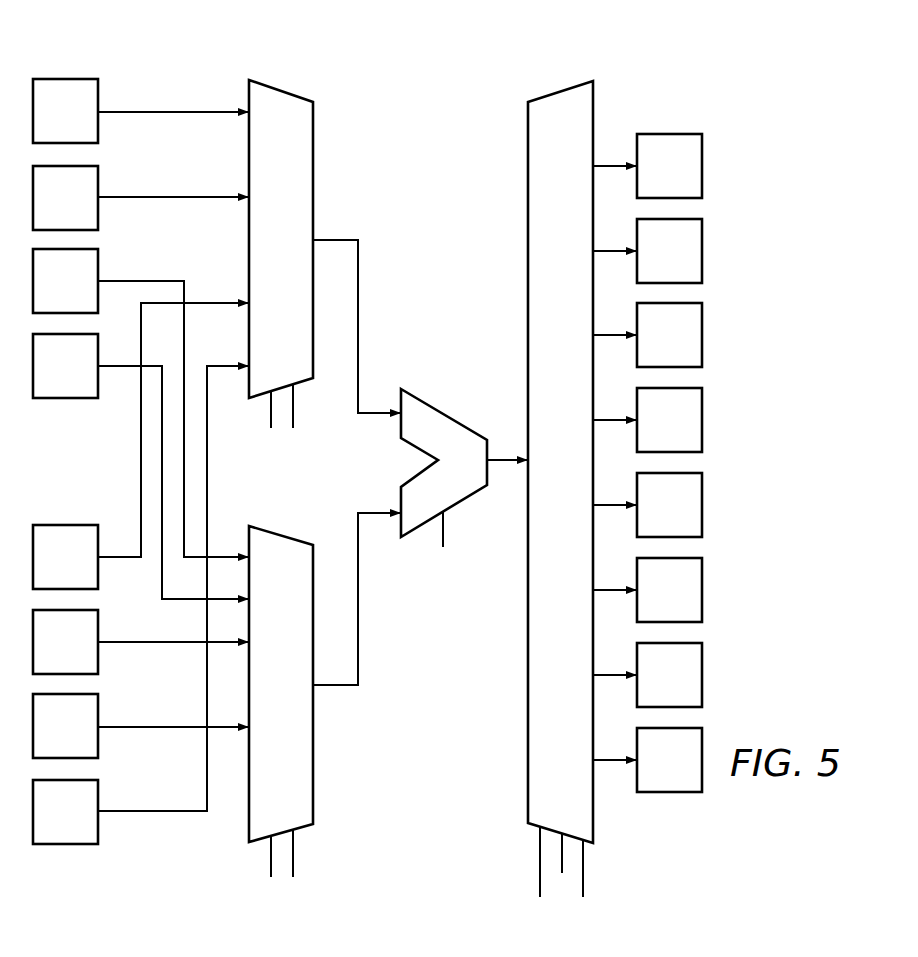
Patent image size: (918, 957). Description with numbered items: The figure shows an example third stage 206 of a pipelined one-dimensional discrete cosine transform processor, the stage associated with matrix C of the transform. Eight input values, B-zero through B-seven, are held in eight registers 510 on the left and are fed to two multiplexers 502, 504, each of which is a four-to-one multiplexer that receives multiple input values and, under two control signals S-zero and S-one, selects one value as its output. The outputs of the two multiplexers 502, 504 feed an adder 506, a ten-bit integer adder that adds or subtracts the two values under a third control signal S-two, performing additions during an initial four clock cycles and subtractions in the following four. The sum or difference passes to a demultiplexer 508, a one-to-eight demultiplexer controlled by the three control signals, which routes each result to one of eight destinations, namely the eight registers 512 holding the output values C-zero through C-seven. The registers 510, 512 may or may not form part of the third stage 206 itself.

The third stage 206 is at (752, 227).
The registers 510 is at (66, 67).
The multiplexer 502 is at (281, 272).
The multiplexer 504 is at (281, 718).
The adder 506 is at (441, 412).
The demultiplexer 508 is at (562, 504).
The registers 512 is at (669, 122).